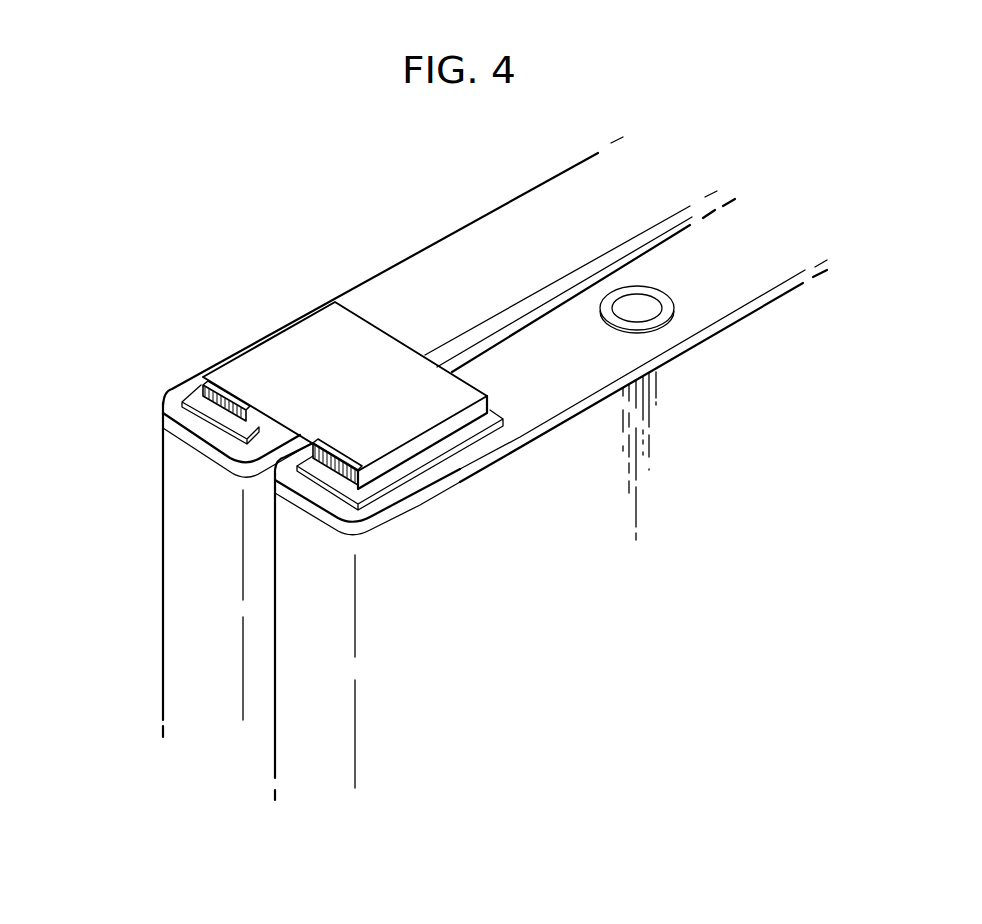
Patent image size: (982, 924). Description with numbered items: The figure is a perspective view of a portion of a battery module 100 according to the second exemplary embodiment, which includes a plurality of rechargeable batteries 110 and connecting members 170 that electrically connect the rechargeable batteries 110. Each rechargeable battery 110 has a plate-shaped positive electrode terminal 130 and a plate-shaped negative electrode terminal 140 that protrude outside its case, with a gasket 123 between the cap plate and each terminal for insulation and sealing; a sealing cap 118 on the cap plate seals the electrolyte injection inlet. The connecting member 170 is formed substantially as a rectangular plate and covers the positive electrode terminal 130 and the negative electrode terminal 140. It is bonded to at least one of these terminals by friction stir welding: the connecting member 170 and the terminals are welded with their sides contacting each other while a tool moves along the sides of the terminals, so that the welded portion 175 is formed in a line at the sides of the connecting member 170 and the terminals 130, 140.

The battery module 100 is at (310, 213).
The rechargeable battery 110 is at (262, 605).
The sealing cap 118 is at (670, 313).
The gasket 123 is at (450, 442).
The positive electrode terminal 130 is at (383, 471).
The negative electrode terminal 140 is at (225, 395).
The connecting member 170 is at (297, 338).
The welded portion 175 is at (338, 463).